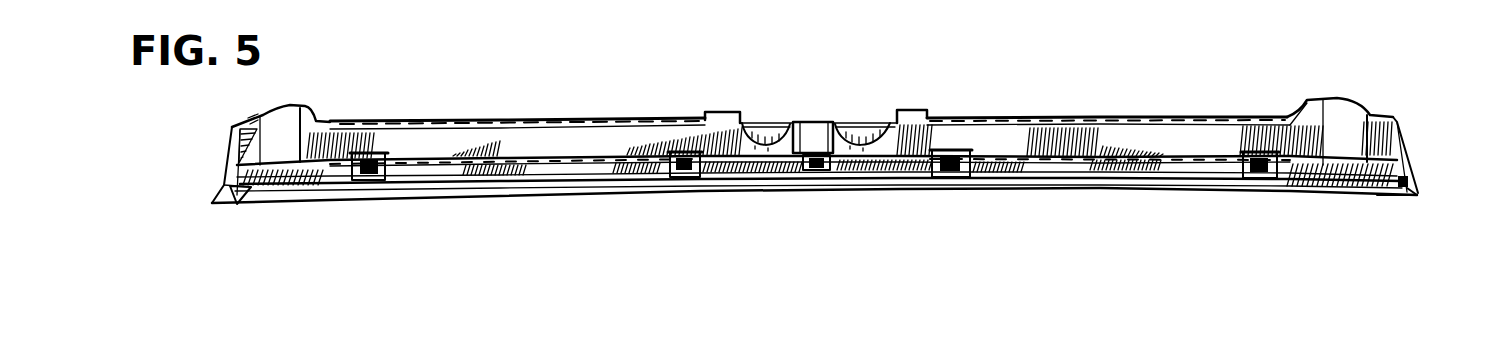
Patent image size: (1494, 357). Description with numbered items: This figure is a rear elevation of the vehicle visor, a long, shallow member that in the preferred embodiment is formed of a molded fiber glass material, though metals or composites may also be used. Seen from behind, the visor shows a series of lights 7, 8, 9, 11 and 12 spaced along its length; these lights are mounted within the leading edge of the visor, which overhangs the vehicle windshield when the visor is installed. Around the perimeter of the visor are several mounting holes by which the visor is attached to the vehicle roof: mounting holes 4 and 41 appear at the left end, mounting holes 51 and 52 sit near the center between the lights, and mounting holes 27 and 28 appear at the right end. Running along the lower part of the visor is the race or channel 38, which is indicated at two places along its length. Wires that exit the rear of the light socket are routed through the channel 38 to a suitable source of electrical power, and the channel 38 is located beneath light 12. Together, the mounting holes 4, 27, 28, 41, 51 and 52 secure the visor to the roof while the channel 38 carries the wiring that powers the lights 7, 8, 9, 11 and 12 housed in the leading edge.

The mounting hole 41 is at (288, 107).
The mounting hole 4 is at (228, 198).
The light 12 is at (372, 178).
The race or channel 38 is at (582, 188).
The light 11 is at (674, 175).
The mounting hole 52 is at (771, 120).
The light 9 is at (817, 175).
The mounting hole 51 is at (858, 135).
The light 8 is at (943, 175).
The light 7 is at (1253, 175).
The mounting hole 28 is at (1362, 113).
The mounting hole 27 is at (1404, 183).